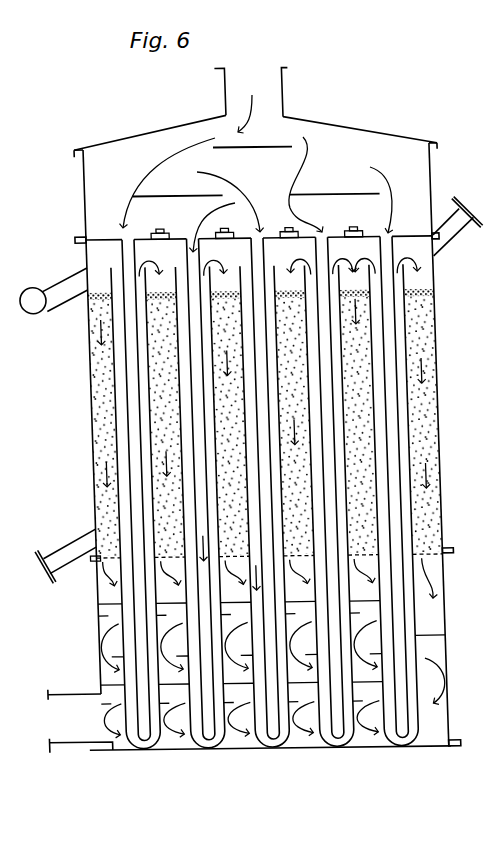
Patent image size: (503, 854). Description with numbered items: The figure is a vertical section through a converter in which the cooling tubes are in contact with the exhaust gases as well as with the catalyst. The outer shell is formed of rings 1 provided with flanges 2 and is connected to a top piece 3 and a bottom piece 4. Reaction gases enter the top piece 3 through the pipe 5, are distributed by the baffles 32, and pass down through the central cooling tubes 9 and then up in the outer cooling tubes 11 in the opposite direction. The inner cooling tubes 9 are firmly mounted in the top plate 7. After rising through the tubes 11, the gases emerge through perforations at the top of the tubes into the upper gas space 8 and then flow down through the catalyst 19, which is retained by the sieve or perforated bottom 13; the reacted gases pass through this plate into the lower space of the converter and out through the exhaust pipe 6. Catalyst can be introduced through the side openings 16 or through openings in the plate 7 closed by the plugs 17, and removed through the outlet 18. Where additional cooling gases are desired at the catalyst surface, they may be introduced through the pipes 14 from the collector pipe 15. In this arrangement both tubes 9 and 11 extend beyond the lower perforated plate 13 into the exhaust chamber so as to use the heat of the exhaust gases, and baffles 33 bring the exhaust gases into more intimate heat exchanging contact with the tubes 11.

The rings 1 is at (85, 172).
The flanges 2 is at (441, 150).
The top piece 3 is at (336, 127).
The bottom piece 4 is at (372, 750).
The pipe 5 is at (268, 84).
The exhaust pipe 6 is at (70, 692).
The top plate 7 is at (88, 239).
The upper gas space 8 is at (92, 250).
The central cooling tubes 9 is at (190, 275).
The outer cooling tubes 11 is at (110, 393).
The sieve or perforated bottom 13 is at (434, 566).
The pipes 14 is at (58, 282).
The collector pipe 15 is at (36, 314).
The side openings 16 is at (451, 250).
The plugs 17 is at (161, 229).
The outlet 18 is at (66, 553).
The catalyst 19 is at (107, 432).
The baffles 32 is at (258, 147).
The baffles 33 is at (100, 604).